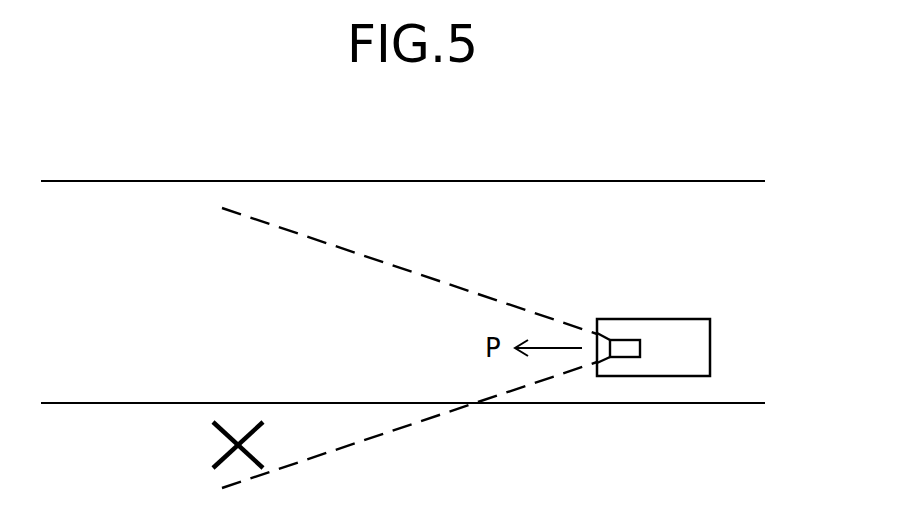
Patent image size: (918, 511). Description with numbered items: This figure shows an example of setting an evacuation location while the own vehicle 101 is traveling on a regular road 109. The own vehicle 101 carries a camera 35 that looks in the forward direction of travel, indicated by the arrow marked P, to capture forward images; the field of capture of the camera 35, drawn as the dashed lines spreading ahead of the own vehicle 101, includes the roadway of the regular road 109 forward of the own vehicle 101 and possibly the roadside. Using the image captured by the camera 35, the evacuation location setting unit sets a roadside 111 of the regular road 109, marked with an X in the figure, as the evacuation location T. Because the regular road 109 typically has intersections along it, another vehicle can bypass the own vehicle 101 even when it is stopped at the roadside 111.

The regular road 109 is at (377, 320).
The own vehicle 101 is at (680, 343).
The camera 35 is at (622, 340).
The roadside 111 is at (233, 442).